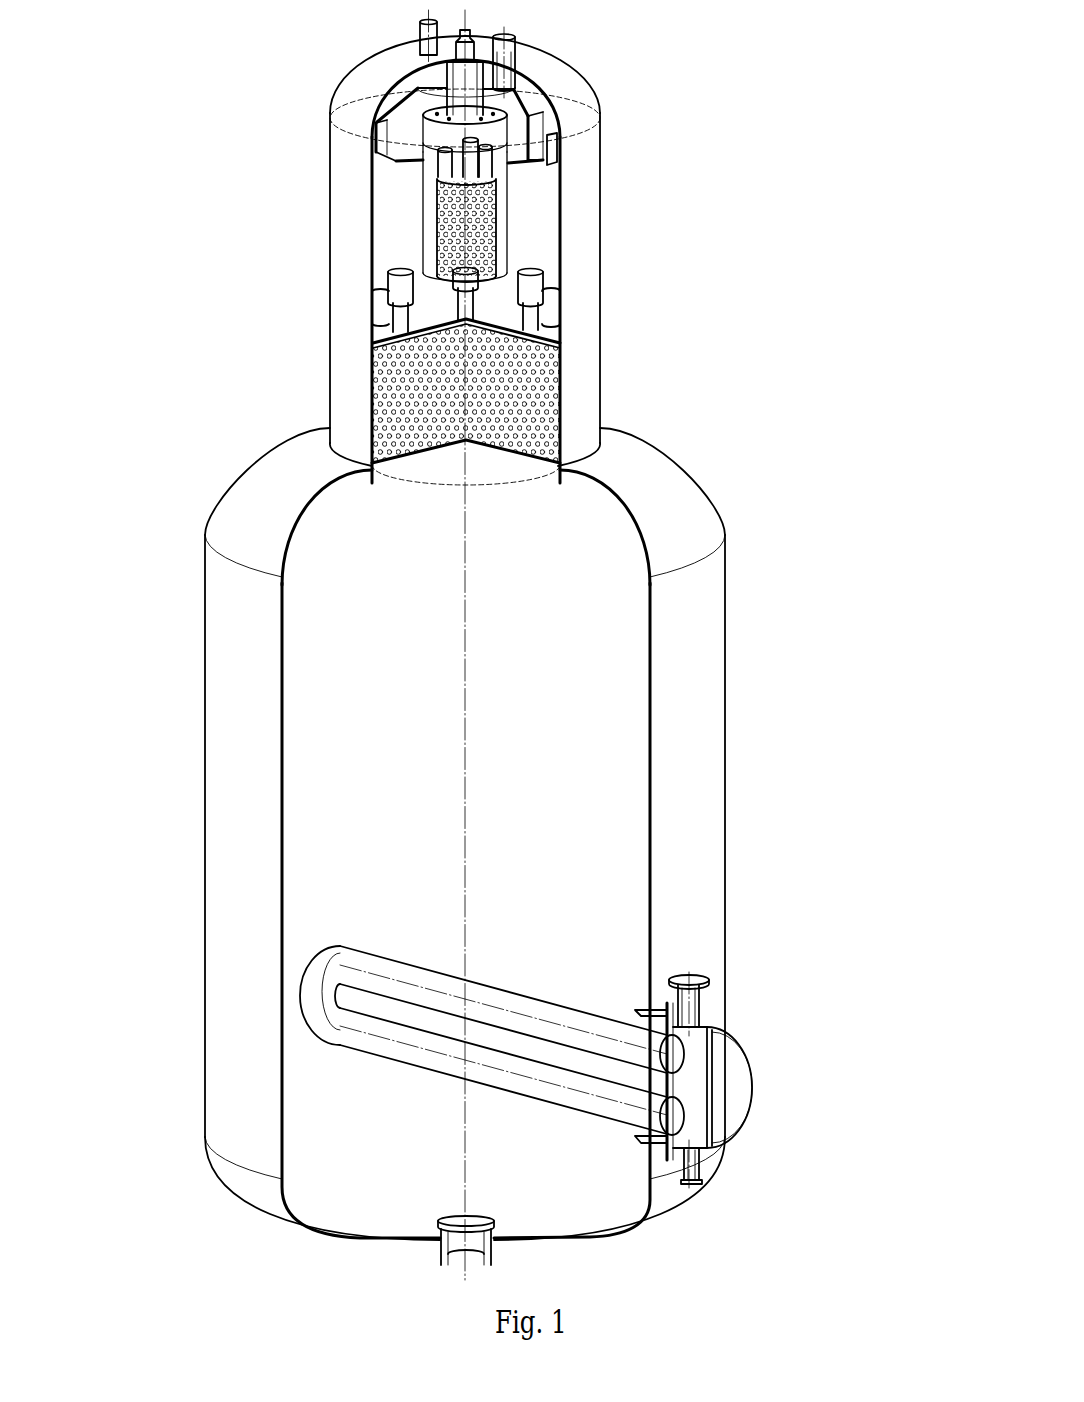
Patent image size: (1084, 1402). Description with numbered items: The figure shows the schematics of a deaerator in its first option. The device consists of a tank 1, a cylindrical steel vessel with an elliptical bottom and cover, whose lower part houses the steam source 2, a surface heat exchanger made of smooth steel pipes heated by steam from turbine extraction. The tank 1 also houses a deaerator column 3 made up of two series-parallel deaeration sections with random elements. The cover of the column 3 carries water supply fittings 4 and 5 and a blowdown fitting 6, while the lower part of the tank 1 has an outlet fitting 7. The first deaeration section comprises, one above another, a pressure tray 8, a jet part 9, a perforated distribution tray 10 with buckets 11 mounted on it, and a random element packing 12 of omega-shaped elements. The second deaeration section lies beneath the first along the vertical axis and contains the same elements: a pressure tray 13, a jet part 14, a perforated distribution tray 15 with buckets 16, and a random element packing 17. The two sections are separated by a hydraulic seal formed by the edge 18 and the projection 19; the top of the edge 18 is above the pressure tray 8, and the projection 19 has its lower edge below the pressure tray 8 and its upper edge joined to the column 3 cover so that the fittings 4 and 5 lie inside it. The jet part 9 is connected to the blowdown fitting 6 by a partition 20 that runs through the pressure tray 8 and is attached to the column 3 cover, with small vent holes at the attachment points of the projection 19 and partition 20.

The tank 1 is at (688, 796).
The steam source 2 is at (373, 967).
The deaerator column 3 is at (574, 431).
The water supply fitting 4 is at (428, 47).
The water supply fitting 5 is at (504, 72).
The blowdown fitting 6 is at (465, 52).
The outlet fitting 7 is at (478, 1248).
The pressure tray of the first deaeration section 8 is at (436, 117).
The jet part of the first deaeration section 9 is at (472, 130).
The distribution tray of the first deaeration section 10 is at (453, 207).
The buckets of the distribution tray of the first deaeration section 11 is at (469, 158).
The random element packing of the first deaeration section 12 is at (462, 172).
The pressure tray of the second deaeration section 13 is at (549, 150).
The jet part of the second deaeration section 14 is at (533, 210).
The distribution tray of the second deaeration section 15 is at (507, 312).
The buckets of the distribution tray of the second deaeration section 16 is at (535, 282).
The random element packing of the second deaeration section 17 is at (515, 372).
The hydraulic seal edge 18 is at (537, 130).
The hydraulic seal projection 19 is at (524, 102).
The partition 20 is at (461, 92).